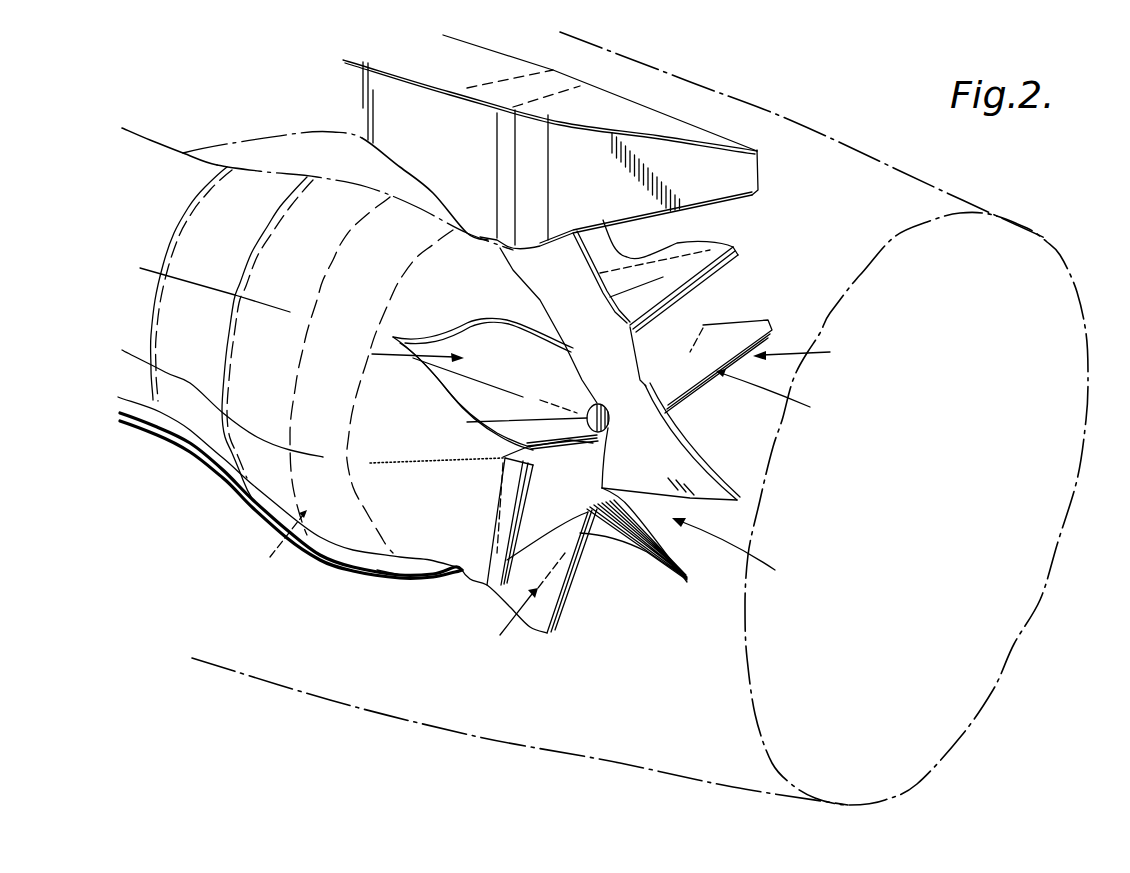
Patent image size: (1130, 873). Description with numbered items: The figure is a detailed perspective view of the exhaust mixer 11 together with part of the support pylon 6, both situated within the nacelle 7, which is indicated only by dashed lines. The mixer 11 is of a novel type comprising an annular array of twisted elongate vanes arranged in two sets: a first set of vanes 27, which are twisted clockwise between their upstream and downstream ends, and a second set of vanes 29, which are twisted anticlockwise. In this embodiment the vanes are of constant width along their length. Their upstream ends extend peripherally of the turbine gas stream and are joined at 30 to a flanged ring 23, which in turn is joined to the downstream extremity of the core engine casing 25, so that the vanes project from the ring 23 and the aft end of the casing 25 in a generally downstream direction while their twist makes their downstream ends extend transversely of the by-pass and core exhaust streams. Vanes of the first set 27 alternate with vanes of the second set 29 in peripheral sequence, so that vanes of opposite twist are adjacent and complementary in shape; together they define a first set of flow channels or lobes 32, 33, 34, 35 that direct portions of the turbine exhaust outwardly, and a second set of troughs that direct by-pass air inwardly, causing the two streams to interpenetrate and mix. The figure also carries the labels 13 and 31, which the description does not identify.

The support pylon 6 is at (488, 181).
The nacelle 7 is at (830, 134).
The exhaust mixer 11 is at (809, 353).
The nacelle rear end 13 is at (1050, 250).
The flanged ring 23 is at (360, 556).
The core engine casing 25 is at (147, 427).
The first set of vanes 27 is at (477, 320).
The second set of vanes 29 is at (723, 240).
The joint of vanes to flanged ring 30 is at (377, 570).
The duct edge 31 is at (281, 552).
The flow channel or lobe 32 is at (777, 401).
The flow channel or lobe 33 is at (739, 556).
The flow channel or lobe 34 is at (509, 627).
The flow channel or lobe 35 is at (393, 350).